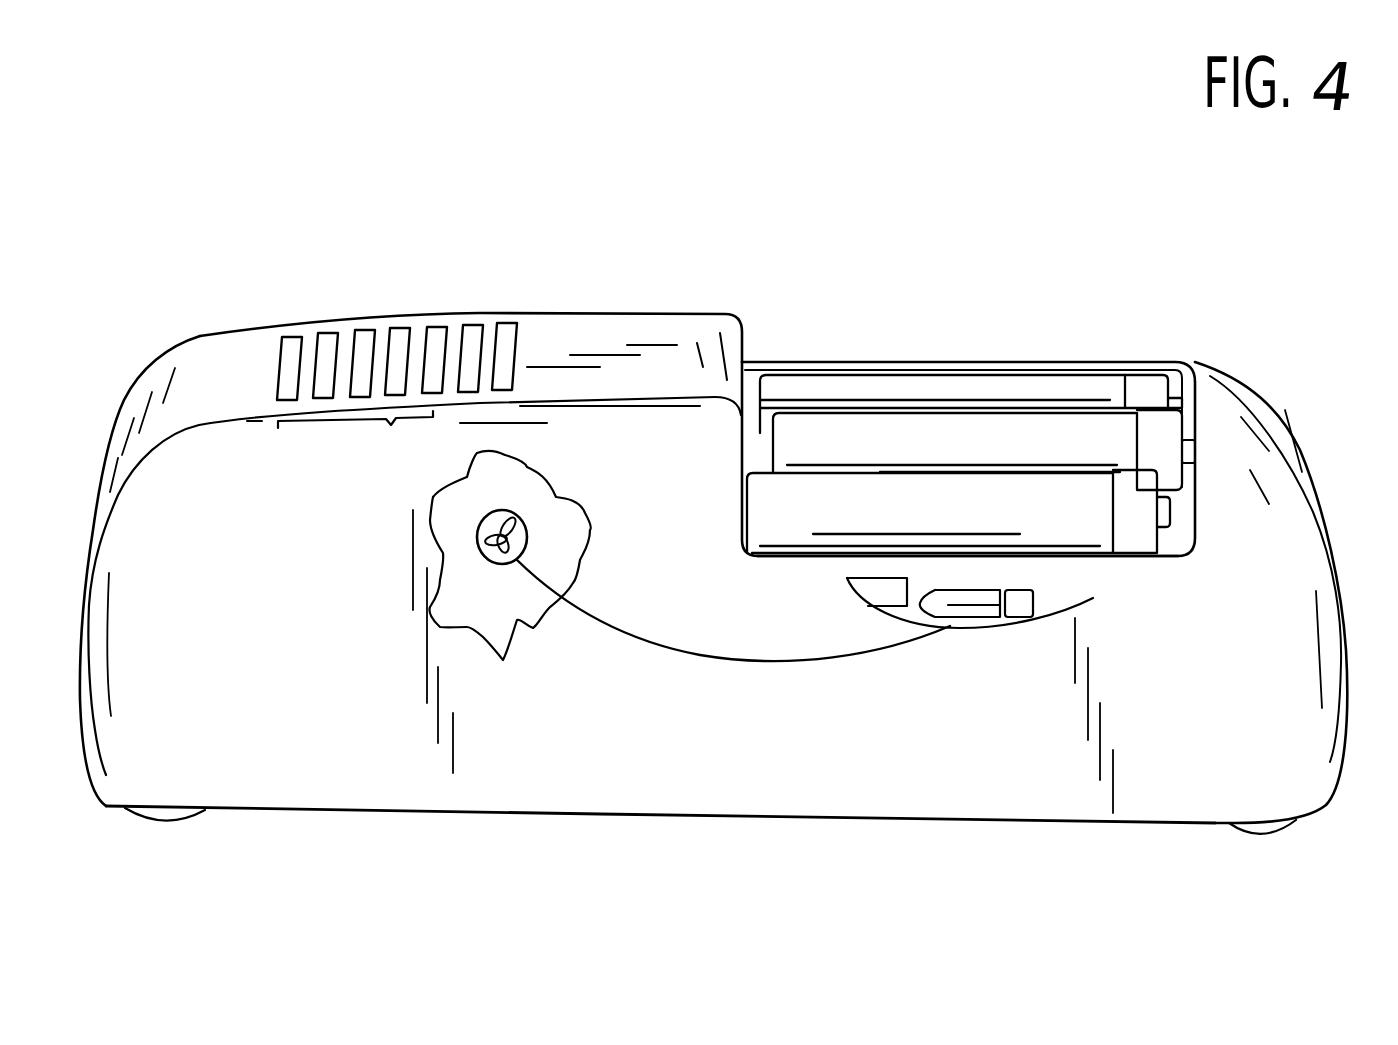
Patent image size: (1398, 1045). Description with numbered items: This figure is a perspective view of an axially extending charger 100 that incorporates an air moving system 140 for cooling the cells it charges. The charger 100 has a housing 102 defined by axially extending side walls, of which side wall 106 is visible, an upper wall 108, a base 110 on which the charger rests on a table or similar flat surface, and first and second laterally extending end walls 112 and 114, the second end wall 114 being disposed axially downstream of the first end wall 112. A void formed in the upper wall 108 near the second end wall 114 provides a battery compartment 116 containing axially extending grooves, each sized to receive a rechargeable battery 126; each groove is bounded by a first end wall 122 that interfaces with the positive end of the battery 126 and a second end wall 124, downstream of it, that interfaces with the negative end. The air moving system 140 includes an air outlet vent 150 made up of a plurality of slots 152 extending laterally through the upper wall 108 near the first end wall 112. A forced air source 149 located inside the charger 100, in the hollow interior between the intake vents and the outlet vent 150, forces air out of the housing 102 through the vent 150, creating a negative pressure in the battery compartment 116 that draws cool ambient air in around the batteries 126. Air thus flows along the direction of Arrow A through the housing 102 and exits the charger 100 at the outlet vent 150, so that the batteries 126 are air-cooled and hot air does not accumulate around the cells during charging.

The charger 100 is at (553, 146).
The housing 102 is at (205, 334).
The side wall 106 is at (312, 628).
The upper wall 108 is at (657, 317).
The base 110 is at (712, 824).
The first end wall 112 is at (112, 444).
The second end wall 114 is at (1333, 534).
The battery compartment 116 is at (1098, 354).
The first end wall 122 is at (743, 460).
The second end wall 124 is at (1185, 543).
The rechargeable battery 126 is at (960, 360).
The air moving system 140 is at (518, 287).
The forced air source 149 is at (522, 512).
The air outlet vent 150 is at (326, 320).
The slots 152 is at (483, 520).